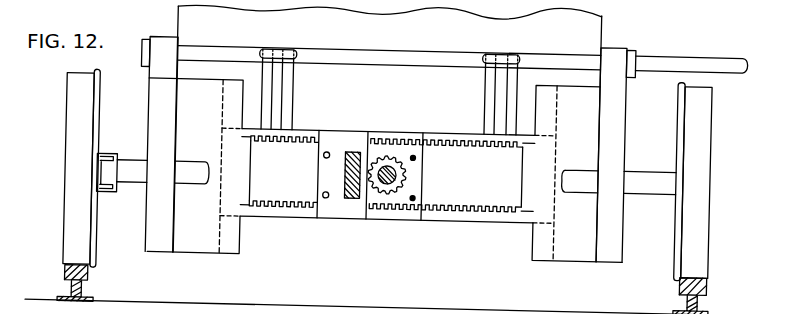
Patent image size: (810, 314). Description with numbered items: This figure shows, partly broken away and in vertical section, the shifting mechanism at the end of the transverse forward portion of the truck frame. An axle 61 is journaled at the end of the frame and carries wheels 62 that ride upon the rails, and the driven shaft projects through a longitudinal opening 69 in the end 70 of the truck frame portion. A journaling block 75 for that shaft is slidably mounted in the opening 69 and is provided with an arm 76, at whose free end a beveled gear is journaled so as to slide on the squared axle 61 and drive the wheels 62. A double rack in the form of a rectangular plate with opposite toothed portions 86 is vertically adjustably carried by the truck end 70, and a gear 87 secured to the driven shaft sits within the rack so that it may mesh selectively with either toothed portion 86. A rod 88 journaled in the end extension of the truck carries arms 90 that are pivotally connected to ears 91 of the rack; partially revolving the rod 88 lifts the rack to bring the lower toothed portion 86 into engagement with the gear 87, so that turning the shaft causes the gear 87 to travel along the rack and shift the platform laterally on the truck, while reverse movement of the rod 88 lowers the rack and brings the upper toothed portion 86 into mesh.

The axle 61 is at (140, 179).
The wheels 62 is at (77, 177).
The longitudinal openings 69 is at (241, 180).
The ends of the truck frame portion 70 is at (386, 149).
The journaling block 75 is at (337, 165).
The arm 76 is at (344, 154).
The toothed portions 86 is at (493, 200).
The gear 87 is at (403, 178).
The rod 88 is at (385, 50).
The arms 90 is at (272, 52).
The ears 91 is at (263, 107).